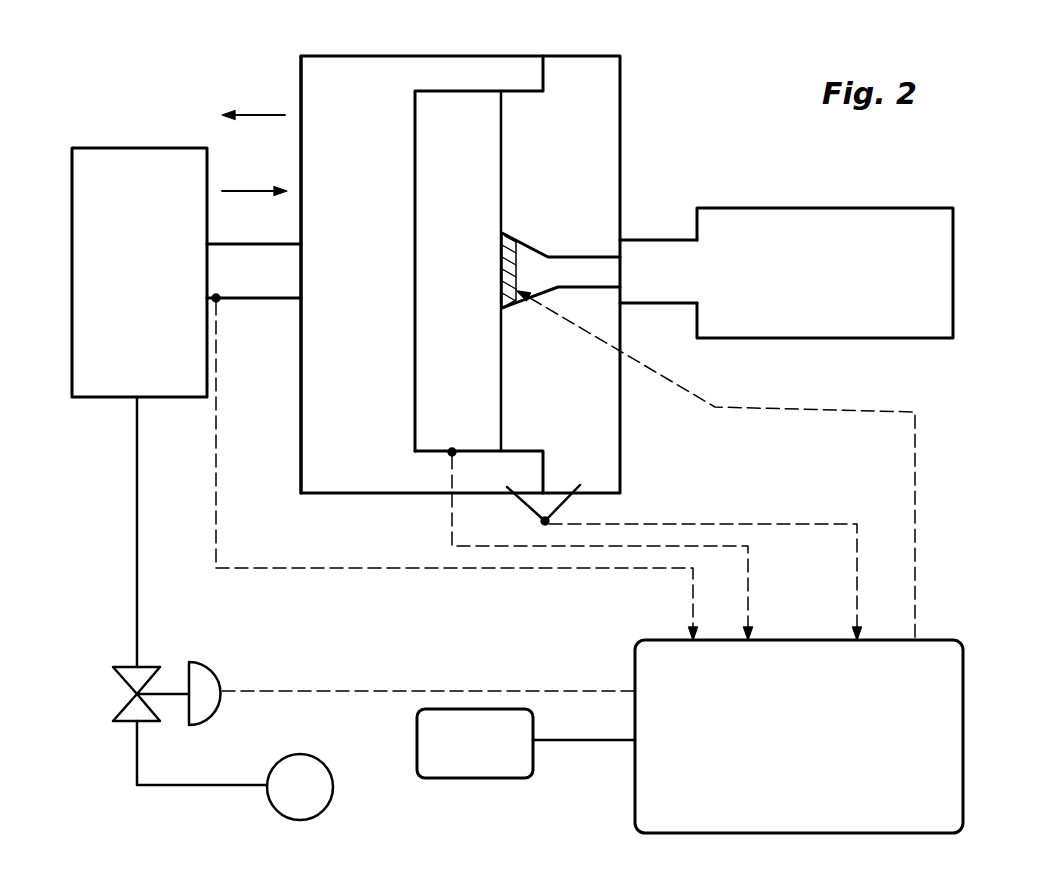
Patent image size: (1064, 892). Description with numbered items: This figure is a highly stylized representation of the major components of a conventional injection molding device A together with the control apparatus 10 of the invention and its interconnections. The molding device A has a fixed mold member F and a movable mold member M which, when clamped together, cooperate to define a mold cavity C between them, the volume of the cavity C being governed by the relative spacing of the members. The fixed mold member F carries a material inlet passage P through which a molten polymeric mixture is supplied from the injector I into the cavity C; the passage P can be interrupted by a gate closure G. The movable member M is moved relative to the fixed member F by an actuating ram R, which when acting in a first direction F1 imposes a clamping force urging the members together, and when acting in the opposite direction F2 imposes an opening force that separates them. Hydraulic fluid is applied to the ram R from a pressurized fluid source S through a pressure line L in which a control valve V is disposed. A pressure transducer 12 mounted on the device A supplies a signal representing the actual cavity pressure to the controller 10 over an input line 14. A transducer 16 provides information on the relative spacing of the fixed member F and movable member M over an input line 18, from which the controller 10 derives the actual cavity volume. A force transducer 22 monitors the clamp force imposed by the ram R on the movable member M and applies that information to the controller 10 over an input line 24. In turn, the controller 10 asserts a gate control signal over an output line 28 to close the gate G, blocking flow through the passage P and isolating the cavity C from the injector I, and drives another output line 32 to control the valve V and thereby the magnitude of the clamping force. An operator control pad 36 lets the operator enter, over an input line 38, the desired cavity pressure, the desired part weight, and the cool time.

The control apparatus 10 is at (978, 751).
The pressure transducer 12 is at (480, 428).
The input line 14 is at (750, 577).
The transducer 16 is at (540, 521).
The input line 18 is at (834, 524).
The force transducer 22 is at (213, 296).
The input line 24 is at (275, 565).
The output line 28 is at (832, 411).
The output line 32 is at (450, 690).
The operator control pad 36 is at (475, 743).
The input line 38 is at (560, 742).
The injection molding device A is at (662, 184).
The mold cavity C is at (461, 135).
The fixed mold member F is at (600, 457).
The movable mold member M is at (318, 458).
The gate closure G is at (521, 250).
The material inlet passage P is at (576, 272).
The injector I is at (834, 204).
The actuating ram R is at (291, 301).
The pressure line L is at (137, 568).
The control valve V is at (152, 658).
The pressurized fluid source S is at (328, 806).
The first direction F1 is at (262, 190).
The opposite direction F2 is at (262, 113).